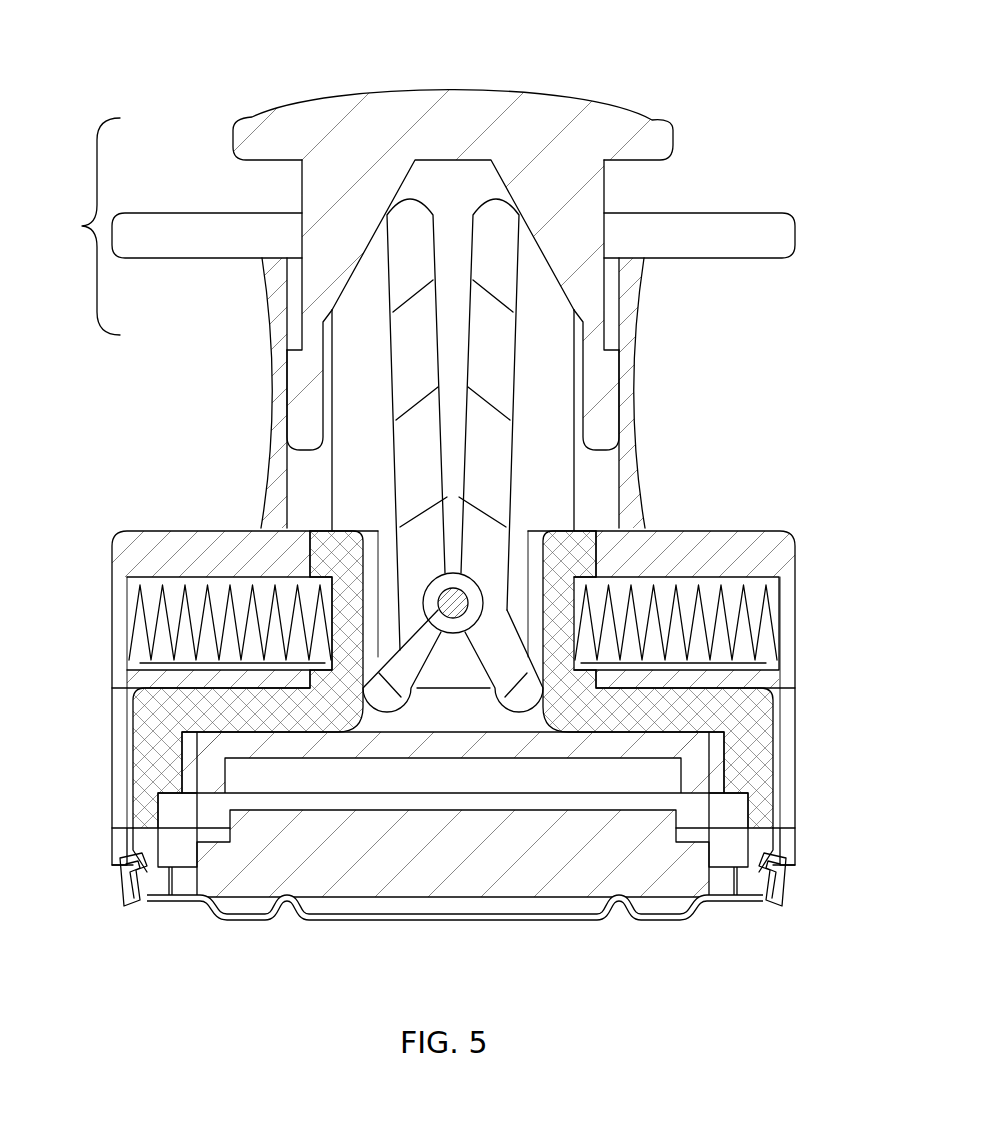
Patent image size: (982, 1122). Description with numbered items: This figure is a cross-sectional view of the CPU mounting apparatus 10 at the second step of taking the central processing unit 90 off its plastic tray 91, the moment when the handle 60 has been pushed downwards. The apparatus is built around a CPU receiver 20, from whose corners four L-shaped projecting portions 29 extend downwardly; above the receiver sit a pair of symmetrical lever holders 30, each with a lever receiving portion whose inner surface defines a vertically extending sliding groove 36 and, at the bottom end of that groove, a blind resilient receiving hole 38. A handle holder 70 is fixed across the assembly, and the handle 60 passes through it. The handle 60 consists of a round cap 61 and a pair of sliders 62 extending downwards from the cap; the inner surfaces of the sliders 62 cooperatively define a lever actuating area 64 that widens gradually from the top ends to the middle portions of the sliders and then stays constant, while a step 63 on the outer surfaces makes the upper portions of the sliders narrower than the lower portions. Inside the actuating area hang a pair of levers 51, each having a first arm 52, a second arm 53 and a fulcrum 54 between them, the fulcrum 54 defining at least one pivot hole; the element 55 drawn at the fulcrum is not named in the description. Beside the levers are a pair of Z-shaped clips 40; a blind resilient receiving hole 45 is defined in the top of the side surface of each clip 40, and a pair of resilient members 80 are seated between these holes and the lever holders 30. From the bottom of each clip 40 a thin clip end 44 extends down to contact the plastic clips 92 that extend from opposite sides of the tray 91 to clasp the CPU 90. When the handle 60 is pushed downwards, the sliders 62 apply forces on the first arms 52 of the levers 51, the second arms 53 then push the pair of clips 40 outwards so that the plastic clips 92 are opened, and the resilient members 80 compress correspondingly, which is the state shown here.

The CPU mounting apparatus 10 is at (552, 77).
The CPU receiver 20 is at (653, 746).
The projecting portion 29 is at (787, 838).
The lever holder 30 is at (183, 553).
The sliding groove 36 is at (300, 488).
The resilient receiving hole 38 is at (135, 584).
The clip 40 is at (210, 718).
The clip end 44 is at (143, 820).
The resilient receiving hole 45 is at (172, 663).
The lever 51 is at (492, 439).
The first arm 52 is at (507, 218).
The second arm 53 is at (527, 702).
The fulcrum 54 is at (462, 623).
The pivot pin 55 is at (455, 603).
The handle 60 is at (78, 226).
The round cap 61 is at (247, 136).
The slider 62 is at (313, 193).
The step 63 is at (293, 350).
The lever actuating area 64 is at (353, 317).
The handle holder 70 is at (743, 223).
The resilient member 80 is at (172, 632).
The central processing unit 90 is at (220, 883).
The plastic tray 91 is at (687, 908).
The plastic clip 92 is at (777, 895).